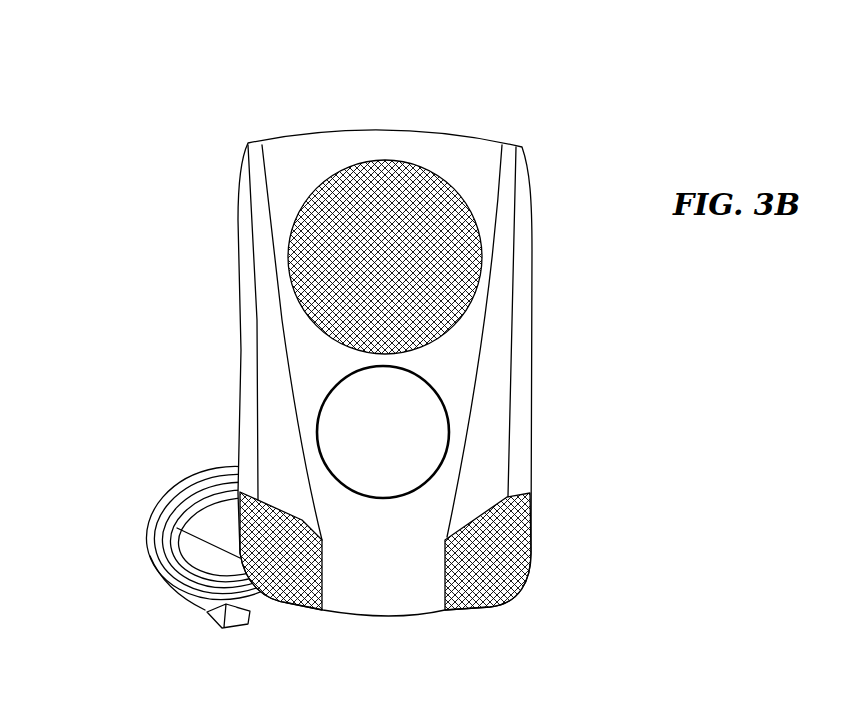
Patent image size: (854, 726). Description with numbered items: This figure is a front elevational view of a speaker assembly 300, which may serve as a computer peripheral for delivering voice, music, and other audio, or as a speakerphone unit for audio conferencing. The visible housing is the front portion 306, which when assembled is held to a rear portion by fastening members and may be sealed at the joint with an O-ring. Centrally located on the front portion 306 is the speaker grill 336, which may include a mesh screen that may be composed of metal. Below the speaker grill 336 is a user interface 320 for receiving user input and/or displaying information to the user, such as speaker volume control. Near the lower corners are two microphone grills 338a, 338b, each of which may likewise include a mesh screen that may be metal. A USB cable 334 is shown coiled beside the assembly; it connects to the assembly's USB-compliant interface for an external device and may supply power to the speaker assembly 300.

The speaker assembly 300 is at (394, 362).
The front portion 306 is at (297, 148).
The user interface 320 is at (318, 430).
The USB cable 334 is at (147, 563).
The speaker grill 336 is at (287, 242).
The microphone grill 338a is at (288, 602).
The microphone grill 338b is at (532, 527).